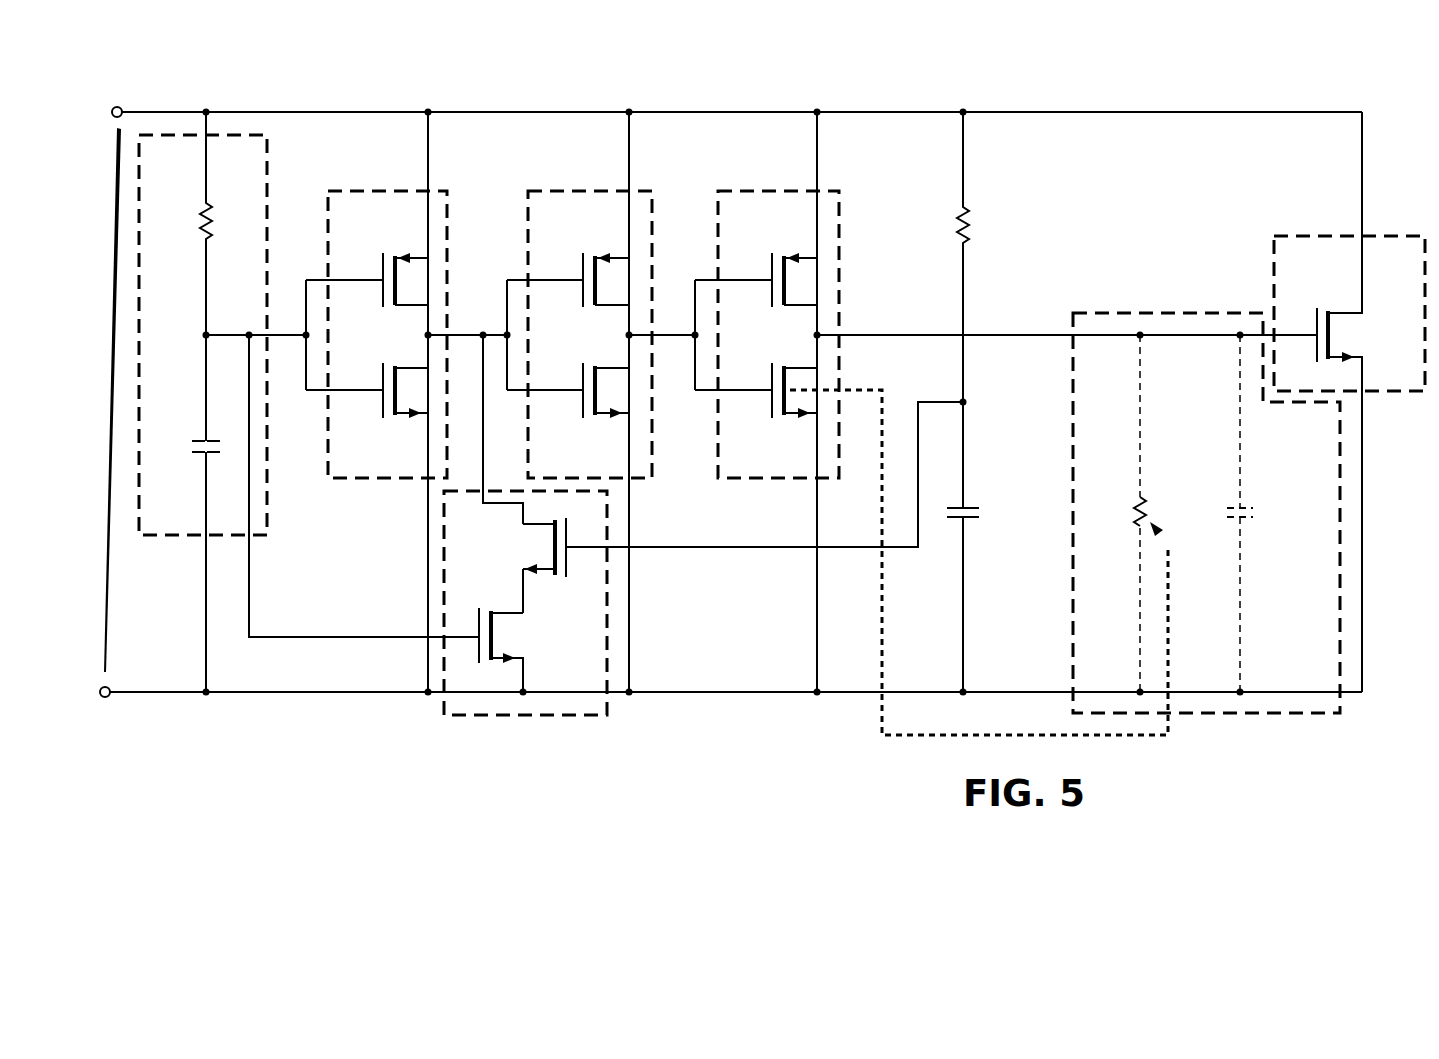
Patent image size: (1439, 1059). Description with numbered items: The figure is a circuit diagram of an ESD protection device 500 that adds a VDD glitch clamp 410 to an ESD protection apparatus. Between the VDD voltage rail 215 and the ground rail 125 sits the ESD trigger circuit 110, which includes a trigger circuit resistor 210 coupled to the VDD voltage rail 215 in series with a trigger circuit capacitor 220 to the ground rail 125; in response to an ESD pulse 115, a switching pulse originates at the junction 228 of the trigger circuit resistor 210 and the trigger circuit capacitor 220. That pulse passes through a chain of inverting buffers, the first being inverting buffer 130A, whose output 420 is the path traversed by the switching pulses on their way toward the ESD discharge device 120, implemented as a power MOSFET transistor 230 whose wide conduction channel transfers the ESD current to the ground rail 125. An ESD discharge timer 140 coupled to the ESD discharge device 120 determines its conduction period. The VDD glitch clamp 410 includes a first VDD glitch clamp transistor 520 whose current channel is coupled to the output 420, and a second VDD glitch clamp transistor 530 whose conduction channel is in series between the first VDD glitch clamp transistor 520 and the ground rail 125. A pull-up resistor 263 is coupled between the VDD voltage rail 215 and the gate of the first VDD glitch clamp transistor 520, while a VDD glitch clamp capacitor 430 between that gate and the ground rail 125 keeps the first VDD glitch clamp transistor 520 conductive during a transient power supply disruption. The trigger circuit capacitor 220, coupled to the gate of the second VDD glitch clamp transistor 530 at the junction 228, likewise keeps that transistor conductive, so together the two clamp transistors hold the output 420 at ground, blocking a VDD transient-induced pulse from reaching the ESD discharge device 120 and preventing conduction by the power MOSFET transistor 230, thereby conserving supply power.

The ESD protection device 500 is at (1042, 88).
The VDD voltage rail 215 is at (750, 111).
The ground rail 125 is at (749, 694).
The ESD pulse 115 is at (107, 622).
The ESD trigger circuit 110 is at (176, 542).
The trigger circuit resistor 210 is at (203, 212).
The trigger circuit capacitor 220 is at (197, 452).
The junction 228 is at (209, 333).
The first inverting buffer 130A is at (388, 186).
The output of the inverting buffer 420 is at (462, 333).
The pull-up resistor 263 is at (970, 222).
The VDD glitch clamp capacitor 430 is at (976, 515).
The VDD glitch clamp 410 is at (512, 724).
The first VDD glitch clamp transistor 520 is at (528, 546).
The second VDD glitch clamp transistor 530 is at (528, 645).
The ESD discharge timer 140 is at (1183, 308).
The ESD discharge device 120 is at (1385, 230).
The power MOSFET transistor 230 is at (1374, 327).